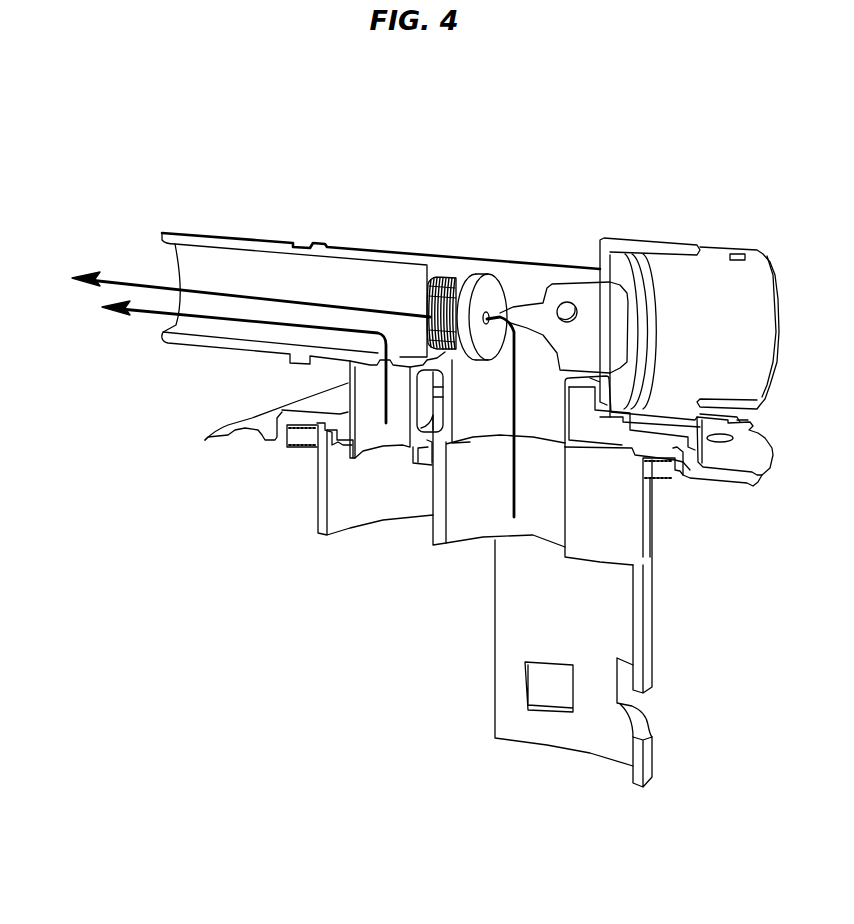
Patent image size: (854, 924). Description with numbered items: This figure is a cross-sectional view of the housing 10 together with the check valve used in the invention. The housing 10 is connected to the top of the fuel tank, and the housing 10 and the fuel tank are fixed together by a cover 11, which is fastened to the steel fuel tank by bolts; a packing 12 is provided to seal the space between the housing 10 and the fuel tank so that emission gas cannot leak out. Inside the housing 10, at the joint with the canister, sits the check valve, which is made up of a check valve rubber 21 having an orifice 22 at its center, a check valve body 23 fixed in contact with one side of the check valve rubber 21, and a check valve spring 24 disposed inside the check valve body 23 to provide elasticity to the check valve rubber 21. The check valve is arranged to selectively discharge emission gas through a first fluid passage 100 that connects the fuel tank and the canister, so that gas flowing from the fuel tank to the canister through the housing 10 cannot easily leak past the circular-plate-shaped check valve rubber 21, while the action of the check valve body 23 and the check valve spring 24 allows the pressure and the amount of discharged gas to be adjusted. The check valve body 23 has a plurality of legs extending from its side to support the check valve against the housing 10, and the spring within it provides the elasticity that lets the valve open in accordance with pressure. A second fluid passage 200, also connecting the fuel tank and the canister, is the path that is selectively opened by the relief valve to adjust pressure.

The housing 10 is at (228, 243).
The first fluid passage 100 is at (289, 298).
The second fluid passage 200 is at (288, 292).
The check valve body 23 is at (435, 320).
The check valve spring 24 is at (453, 277).
The check valve rubber 21 is at (492, 287).
The orifice 22 is at (490, 315).
The cover 11 is at (262, 420).
The packing 12 is at (297, 447).